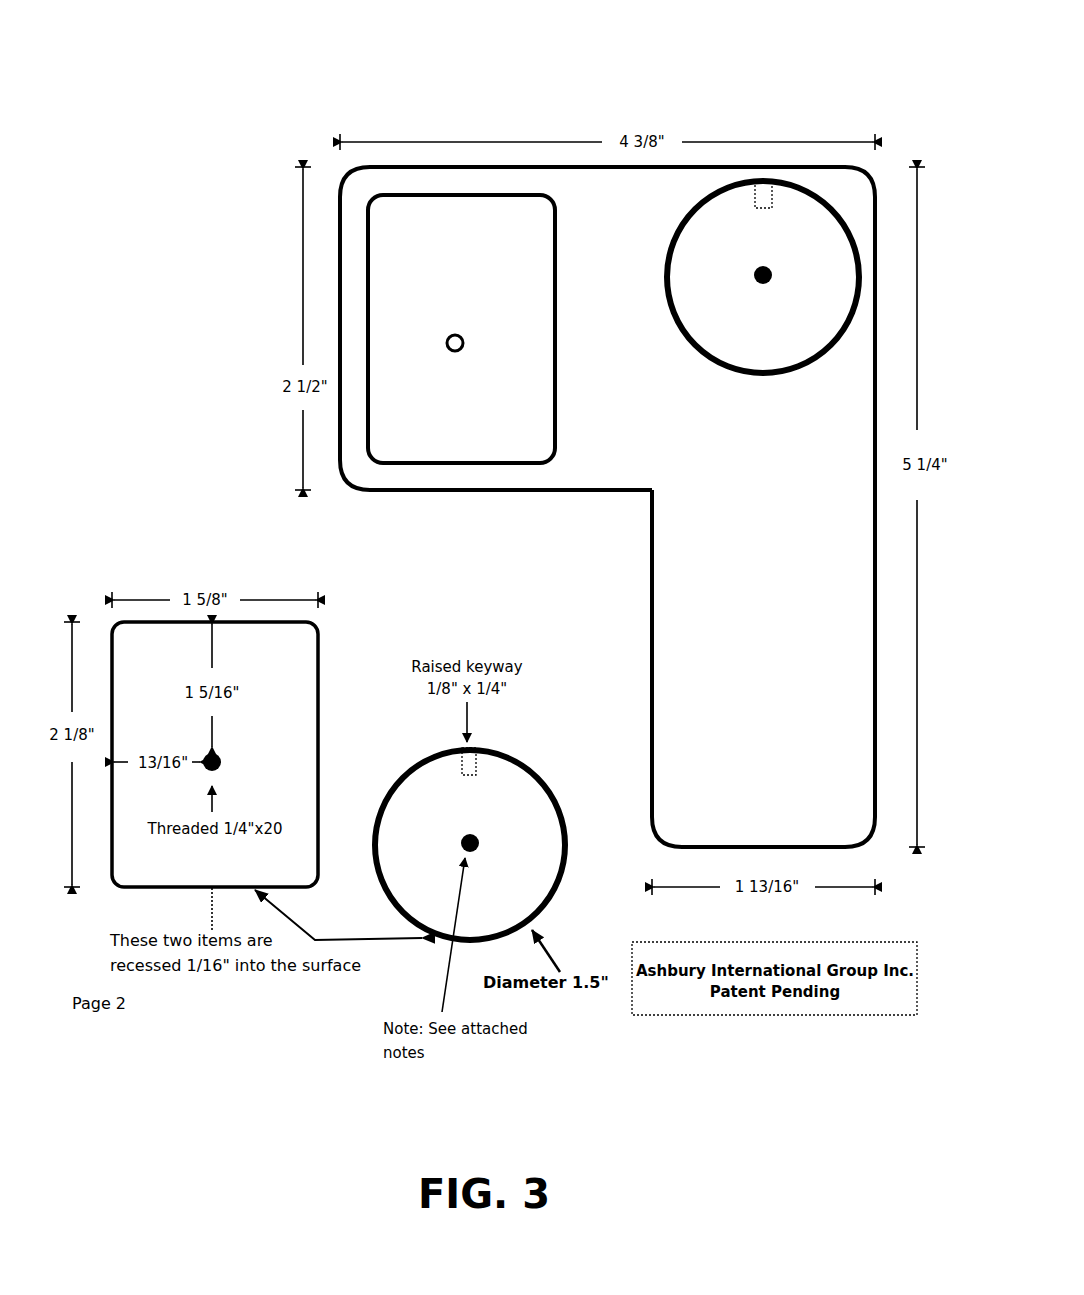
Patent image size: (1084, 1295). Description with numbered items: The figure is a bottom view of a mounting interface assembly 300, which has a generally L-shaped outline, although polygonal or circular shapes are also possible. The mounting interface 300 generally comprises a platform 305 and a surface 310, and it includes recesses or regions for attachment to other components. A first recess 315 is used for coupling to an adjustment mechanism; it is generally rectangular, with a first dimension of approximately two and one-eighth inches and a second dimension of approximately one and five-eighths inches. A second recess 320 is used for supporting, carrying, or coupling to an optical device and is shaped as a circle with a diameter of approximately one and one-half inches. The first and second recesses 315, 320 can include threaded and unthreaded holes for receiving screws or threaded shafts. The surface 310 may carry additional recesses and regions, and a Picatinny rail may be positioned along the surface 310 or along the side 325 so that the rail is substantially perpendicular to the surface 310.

The mounting interface assembly 300 is at (440, 64).
The platform 305 is at (752, 88).
The surface 310 is at (763, 665).
The first recess 315 is at (320, 615).
The second recess 320 is at (535, 758).
The side 325 is at (873, 683).